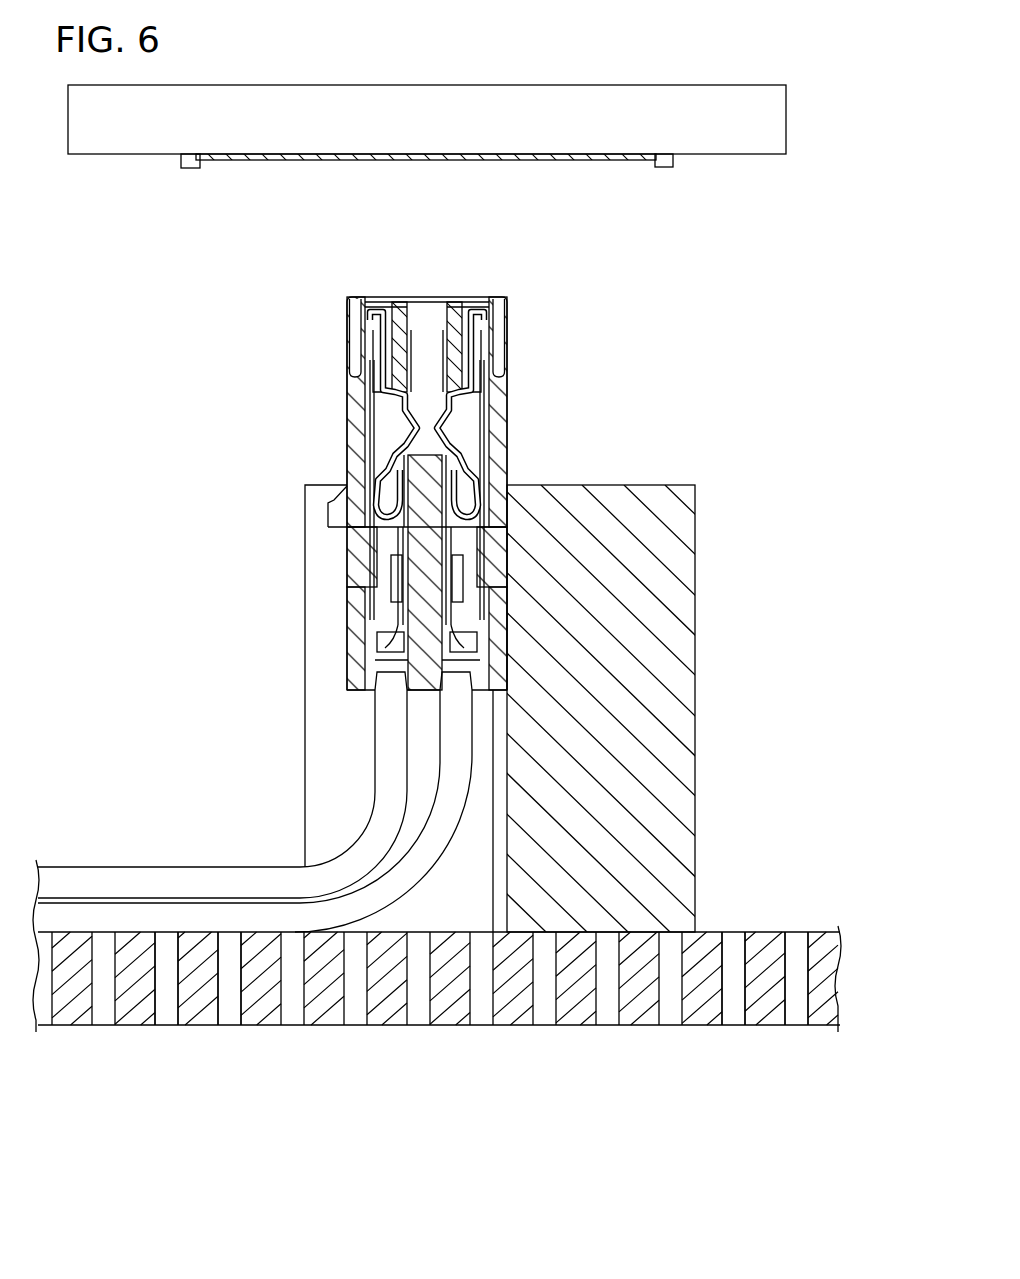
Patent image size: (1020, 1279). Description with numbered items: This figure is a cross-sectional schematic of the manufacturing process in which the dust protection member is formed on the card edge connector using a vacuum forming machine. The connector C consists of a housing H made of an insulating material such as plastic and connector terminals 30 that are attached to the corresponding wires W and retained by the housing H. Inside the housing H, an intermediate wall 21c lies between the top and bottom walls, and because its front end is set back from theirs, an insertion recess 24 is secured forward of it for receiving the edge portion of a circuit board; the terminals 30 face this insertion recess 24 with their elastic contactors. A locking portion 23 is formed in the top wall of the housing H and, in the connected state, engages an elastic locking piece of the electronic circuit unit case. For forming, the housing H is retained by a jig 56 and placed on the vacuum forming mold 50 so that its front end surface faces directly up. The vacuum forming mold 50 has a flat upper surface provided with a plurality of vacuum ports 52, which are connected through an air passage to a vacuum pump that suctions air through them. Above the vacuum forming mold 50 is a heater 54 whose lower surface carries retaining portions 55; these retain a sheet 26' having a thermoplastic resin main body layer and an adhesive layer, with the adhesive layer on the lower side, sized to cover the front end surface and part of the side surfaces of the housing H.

The heater 54 is at (775, 117).
The retaining portions 55 is at (185, 169).
The sheet 26' is at (426, 189).
The insertion recess 24 is at (427, 313).
The connector C is at (512, 343).
The housing H is at (512, 381).
The connector terminals 30 is at (392, 412).
The intermediate wall 21c is at (437, 545).
The locking portion 23 is at (340, 512).
The jig 56 is at (665, 700).
The wires W is at (101, 916).
The vacuum ports 52 is at (232, 942).
The vacuum forming mold 50 is at (735, 1028).